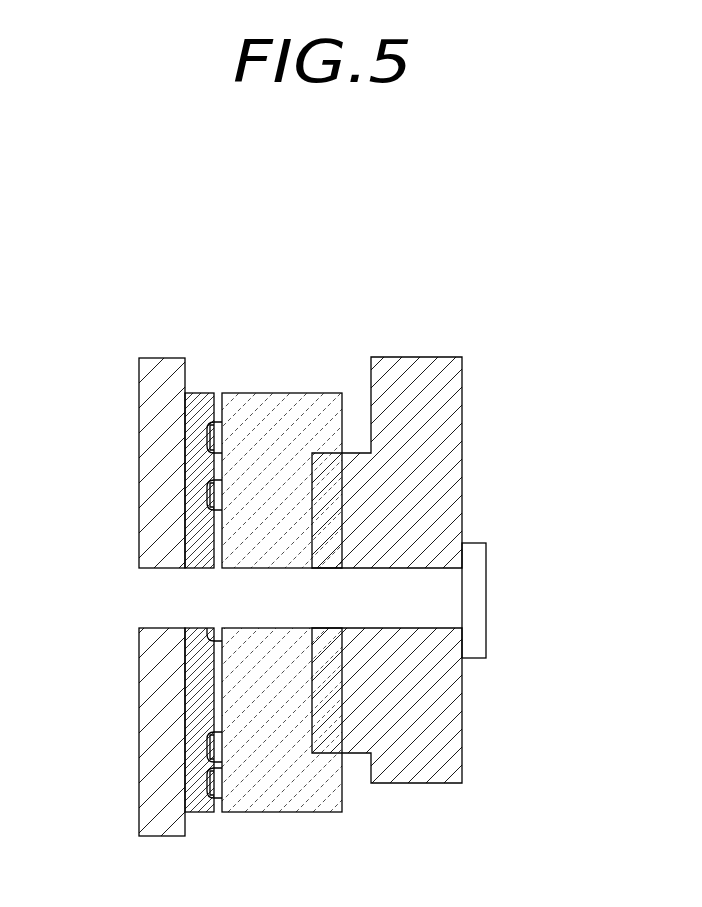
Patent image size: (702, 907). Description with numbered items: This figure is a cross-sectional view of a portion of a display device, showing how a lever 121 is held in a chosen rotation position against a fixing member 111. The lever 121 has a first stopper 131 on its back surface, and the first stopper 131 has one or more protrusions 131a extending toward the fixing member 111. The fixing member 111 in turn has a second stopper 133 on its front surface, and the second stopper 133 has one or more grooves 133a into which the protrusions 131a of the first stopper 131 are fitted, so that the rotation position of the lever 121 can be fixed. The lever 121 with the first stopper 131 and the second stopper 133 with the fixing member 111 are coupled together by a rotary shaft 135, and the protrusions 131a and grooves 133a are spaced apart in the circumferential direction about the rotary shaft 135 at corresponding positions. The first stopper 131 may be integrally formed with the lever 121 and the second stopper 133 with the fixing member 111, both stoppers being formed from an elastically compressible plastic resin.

The fixing member 111 is at (147, 405).
The lever 121 is at (445, 412).
The first stopper 131 is at (278, 400).
The protrusion 131a is at (218, 783).
The second stopper 133 is at (199, 397).
The groove 133a is at (203, 783).
The rotary shaft 135 is at (438, 610).